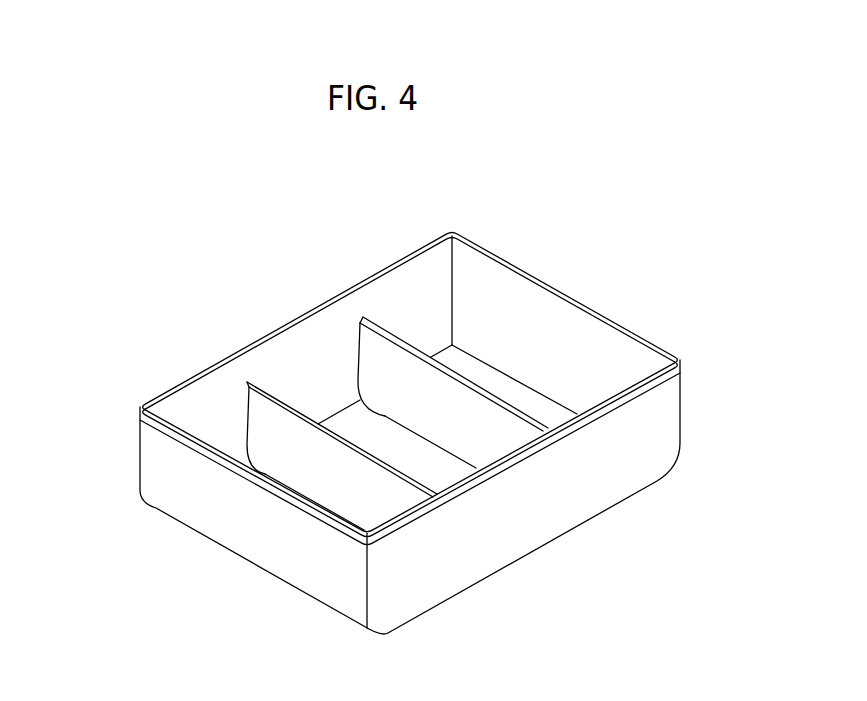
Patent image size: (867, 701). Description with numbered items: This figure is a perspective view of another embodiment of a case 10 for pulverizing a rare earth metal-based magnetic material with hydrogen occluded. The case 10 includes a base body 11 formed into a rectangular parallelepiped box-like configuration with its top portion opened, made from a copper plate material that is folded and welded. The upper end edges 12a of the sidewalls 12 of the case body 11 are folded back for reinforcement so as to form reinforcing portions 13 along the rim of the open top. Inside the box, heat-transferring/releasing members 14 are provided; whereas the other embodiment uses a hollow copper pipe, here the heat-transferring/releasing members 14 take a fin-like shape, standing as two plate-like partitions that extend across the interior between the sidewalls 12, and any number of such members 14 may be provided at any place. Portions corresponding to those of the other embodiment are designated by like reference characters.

The case 10 is at (394, 419).
The base body 11 is at (603, 315).
The sidewalls 12 is at (350, 602).
The upper end edges 12a is at (247, 472).
The flange 13 is at (182, 437).
The heat-transferring/releasing member 14 is at (360, 322).